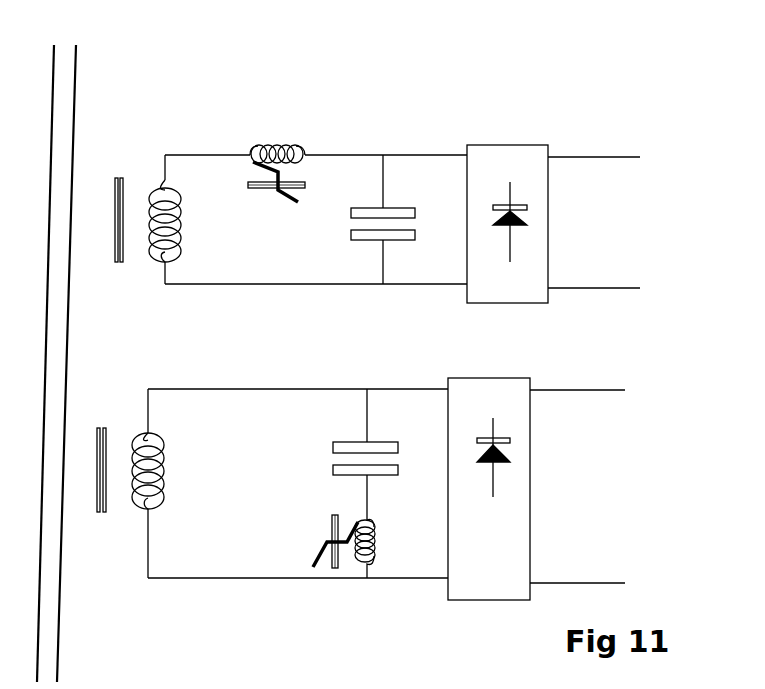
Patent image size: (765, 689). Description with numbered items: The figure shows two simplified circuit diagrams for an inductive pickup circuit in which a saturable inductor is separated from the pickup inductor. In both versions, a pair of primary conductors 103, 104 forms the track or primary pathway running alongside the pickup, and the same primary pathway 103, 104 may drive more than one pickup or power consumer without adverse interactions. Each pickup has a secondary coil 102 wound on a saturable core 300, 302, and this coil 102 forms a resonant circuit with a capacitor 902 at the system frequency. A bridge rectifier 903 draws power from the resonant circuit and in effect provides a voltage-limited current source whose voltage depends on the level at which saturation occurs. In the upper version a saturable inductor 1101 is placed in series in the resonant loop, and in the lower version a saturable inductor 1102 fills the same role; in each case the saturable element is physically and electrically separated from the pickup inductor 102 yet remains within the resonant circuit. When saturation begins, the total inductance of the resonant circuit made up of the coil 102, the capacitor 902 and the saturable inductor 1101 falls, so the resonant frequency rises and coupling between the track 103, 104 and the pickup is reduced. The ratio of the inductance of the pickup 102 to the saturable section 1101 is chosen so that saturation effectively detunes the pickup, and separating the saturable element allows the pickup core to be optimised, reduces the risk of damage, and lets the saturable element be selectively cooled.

The primary conductor 103 is at (53, 48).
The primary conductor 104 is at (78, 54).
The saturable core 300 is at (130, 305).
The saturable core 302 is at (120, 178).
The secondary coil 102 is at (178, 256).
The saturable inductor 1101 is at (297, 145).
The saturable inductor 1102 is at (305, 533).
The capacitor 902 is at (414, 208).
The bridge rectifier 903 is at (545, 145).